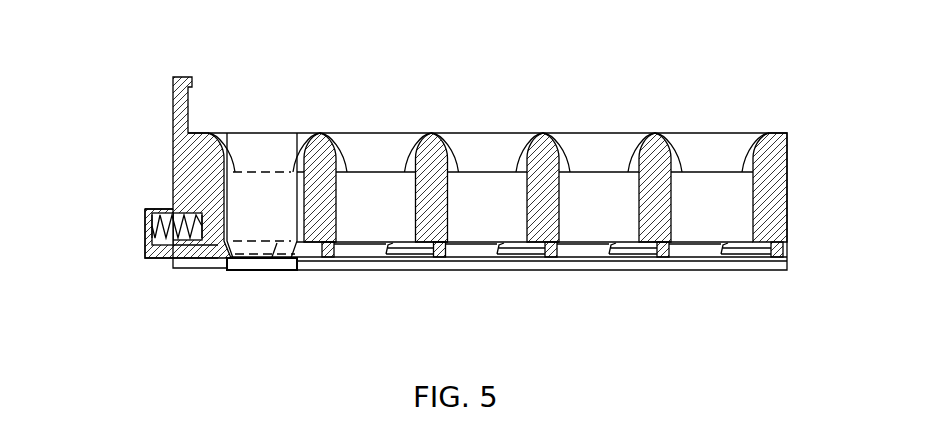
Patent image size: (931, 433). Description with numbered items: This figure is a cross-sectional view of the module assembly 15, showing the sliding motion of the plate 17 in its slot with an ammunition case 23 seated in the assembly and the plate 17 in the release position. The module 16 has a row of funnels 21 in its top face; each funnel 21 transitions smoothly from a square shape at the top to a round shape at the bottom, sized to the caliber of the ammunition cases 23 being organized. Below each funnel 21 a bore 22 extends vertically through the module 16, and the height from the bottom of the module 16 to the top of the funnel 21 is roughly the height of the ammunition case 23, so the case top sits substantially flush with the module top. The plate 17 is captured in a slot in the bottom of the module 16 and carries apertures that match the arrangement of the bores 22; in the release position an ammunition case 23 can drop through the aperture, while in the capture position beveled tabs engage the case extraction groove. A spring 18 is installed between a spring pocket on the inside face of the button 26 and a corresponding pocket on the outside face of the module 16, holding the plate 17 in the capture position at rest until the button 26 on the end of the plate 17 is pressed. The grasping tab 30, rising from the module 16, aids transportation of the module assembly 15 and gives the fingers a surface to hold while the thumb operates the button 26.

The module assembly 15 is at (107, 56).
The module 16 is at (788, 202).
The plate 17 is at (441, 258).
The spring 18 is at (172, 222).
The funnel 21 is at (377, 153).
The bore 22 is at (483, 203).
The ammunition case 23 is at (262, 272).
The button 26 is at (145, 235).
The grasping tab 30 is at (192, 77).